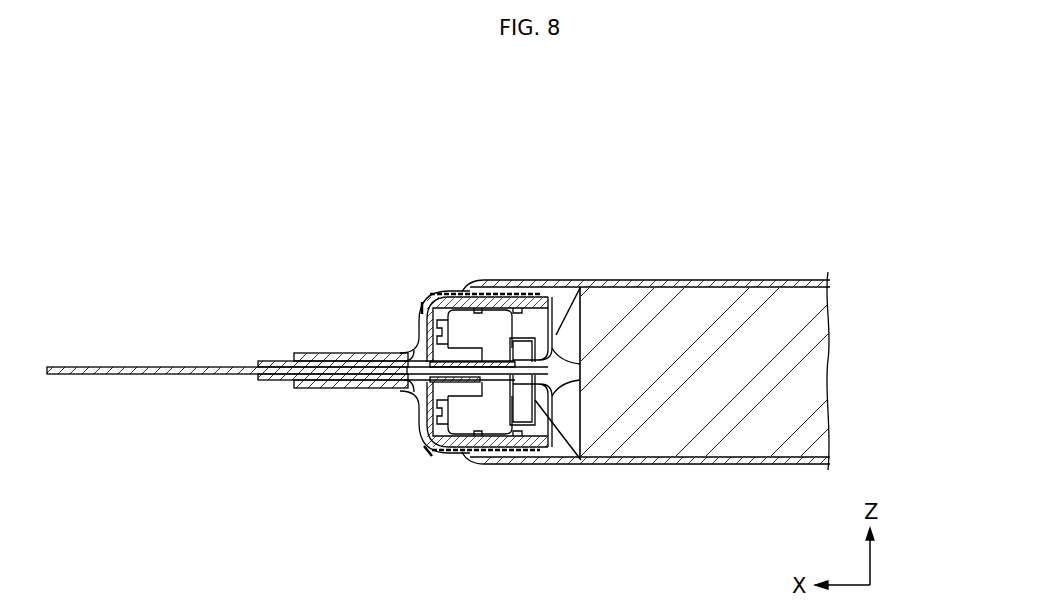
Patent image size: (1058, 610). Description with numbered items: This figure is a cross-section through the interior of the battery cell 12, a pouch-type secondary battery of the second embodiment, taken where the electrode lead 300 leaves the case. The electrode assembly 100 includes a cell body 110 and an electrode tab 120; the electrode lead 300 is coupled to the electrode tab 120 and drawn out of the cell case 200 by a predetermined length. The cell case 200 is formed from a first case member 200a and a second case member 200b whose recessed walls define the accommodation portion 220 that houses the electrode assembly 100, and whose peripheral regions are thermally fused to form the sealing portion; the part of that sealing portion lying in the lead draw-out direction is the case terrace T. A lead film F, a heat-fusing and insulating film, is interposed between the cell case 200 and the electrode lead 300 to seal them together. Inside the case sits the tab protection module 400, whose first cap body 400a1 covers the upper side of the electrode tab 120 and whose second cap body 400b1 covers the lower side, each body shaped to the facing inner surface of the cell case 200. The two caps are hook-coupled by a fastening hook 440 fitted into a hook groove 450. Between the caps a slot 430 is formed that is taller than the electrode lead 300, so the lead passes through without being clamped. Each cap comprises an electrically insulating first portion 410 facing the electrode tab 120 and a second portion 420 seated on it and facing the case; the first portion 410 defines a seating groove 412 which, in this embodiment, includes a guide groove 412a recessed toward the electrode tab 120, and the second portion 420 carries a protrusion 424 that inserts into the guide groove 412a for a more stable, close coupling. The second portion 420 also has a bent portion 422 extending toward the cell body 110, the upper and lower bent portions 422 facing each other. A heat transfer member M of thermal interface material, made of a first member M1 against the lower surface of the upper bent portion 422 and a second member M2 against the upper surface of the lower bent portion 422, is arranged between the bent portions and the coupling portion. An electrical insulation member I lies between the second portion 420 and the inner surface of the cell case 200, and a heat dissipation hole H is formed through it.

The battery cell 12 is at (255, 207).
The electrode lead 300 is at (152, 366).
The lead film F is at (268, 400).
The case terrace T is at (311, 352).
The slot 430 is at (412, 356).
The first cap body 400a1 is at (421, 313).
The second cap body 400b1 is at (435, 460).
The seating groove 412 is at (455, 295).
The guide groove 412a is at (468, 295).
The first portion 410 is at (546, 296).
The second portion 420 is at (526, 298).
The protrusion 424 is at (516, 336).
The bent portion 422 is at (498, 344).
The fastening hook 440 is at (582, 460).
The hook groove 450 is at (545, 358).
The electrical insulation member I is at (430, 300).
The heat dissipation hole H is at (440, 300).
The heat transfer member M is at (352, 400).
The first member M1 is at (426, 392).
The second member M2 is at (428, 428).
The cell case 200 is at (649, 351).
The first case member 200a is at (764, 280).
The second case member 200b is at (744, 466).
The accommodation portion 220 is at (800, 283).
The electrode assembly 100 is at (734, 349).
The cell body 110 is at (690, 300).
The electrode tab 120 is at (566, 362).
The tab protection module 400 is at (552, 420).